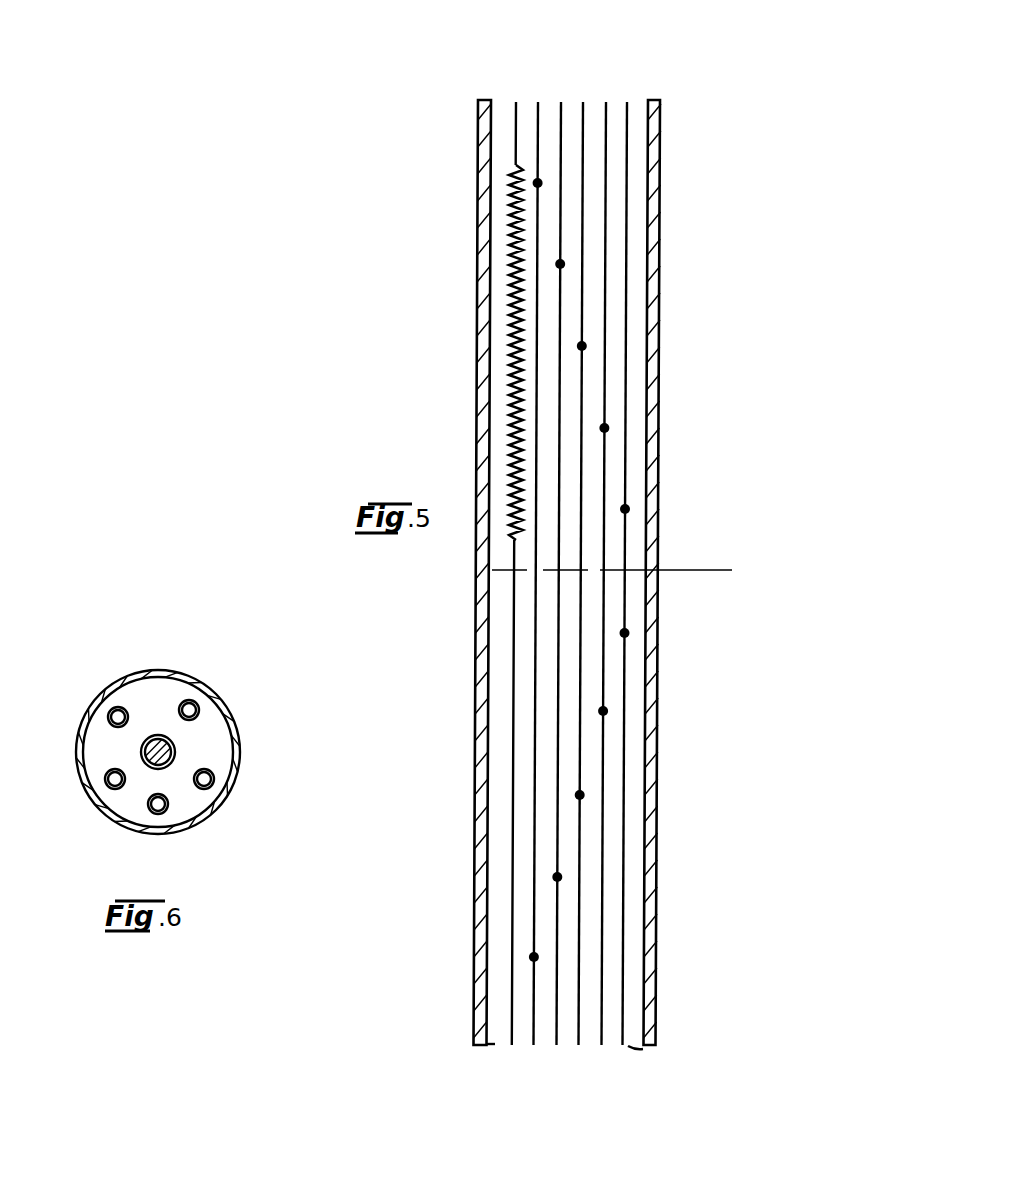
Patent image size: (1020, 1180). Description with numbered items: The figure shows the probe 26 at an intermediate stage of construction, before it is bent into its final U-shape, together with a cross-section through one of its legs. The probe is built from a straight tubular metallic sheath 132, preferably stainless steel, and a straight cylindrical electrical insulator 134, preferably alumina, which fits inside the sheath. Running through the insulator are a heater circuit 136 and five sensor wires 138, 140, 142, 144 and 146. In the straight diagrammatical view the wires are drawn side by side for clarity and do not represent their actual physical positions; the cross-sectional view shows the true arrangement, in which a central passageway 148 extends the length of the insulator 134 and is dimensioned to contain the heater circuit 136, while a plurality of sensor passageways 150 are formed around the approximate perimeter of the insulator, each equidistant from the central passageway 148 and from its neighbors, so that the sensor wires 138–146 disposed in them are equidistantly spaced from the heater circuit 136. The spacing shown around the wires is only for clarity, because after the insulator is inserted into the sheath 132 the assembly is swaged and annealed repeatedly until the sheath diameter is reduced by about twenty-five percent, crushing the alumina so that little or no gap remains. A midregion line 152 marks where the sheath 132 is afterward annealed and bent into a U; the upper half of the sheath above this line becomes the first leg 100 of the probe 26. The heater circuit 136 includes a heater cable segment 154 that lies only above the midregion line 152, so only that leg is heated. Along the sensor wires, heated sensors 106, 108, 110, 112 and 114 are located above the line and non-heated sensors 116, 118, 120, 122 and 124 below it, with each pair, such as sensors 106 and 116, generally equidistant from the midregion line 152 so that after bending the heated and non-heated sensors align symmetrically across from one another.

In FIG. 5, the probe 26 is at (595, 40).
In FIG. 5, the first leg 100 is at (660, 313).
In FIG. 5, the heated sensor 106 is at (538, 183).
In FIG. 5, the heated sensor 108 is at (560, 264).
In FIG. 5, the heated sensor 110 is at (582, 346).
In FIG. 5, the heated sensor 112 is at (604, 428).
In FIG. 5, the heated sensor 114 is at (625, 509).
In FIG. 5, the non-heated sensor 116 is at (534, 957).
In FIG. 5, the non-heated sensor 118 is at (557, 877).
In FIG. 5, the non-heated sensor 120 is at (580, 795).
In FIG. 5, the non-heated sensor 122 is at (603, 711).
In FIG. 5, the non-heated sensor 124 is at (624, 633).
In FIG. 5, the tubular metallic sheath 132 is at (478, 227).
In FIG. 6, the tubular metallic sheath 132 is at (218, 692).
In FIG. 5, the cylindrical electrical insulator 134 is at (637, 155).
In FIG. 6, the cylindrical electrical insulator 134 is at (212, 715).
In FIG. 5, the heater circuit 136 is at (502, 106).
In FIG. 6, the heater circuit 136 is at (158, 748).
In FIG. 5, the sensor wire 138 is at (538, 115).
In FIG. 6, the sensor wire 138 is at (191, 703).
In FIG. 5, the sensor wire 140 is at (562, 115).
In FIG. 6, the sensor wire 140 is at (208, 782).
In FIG. 5, the sensor wire 142 is at (584, 110).
In FIG. 6, the sensor wire 142 is at (153, 806).
In FIG. 5, the sensor wire 144 is at (607, 110).
In FIG. 6, the sensor wire 144 is at (110, 782).
In FIG. 5, the sensor wire 146 is at (632, 113).
In FIG. 6, the sensor wire 146 is at (113, 718).
In FIG. 6, the central passageway 148 is at (177, 750).
In FIG. 6, the sensor passageway 150 is at (188, 700).
In FIG. 5, the midregion line 152 is at (680, 570).
In FIG. 5, the heater cable segment 154 is at (516, 272).